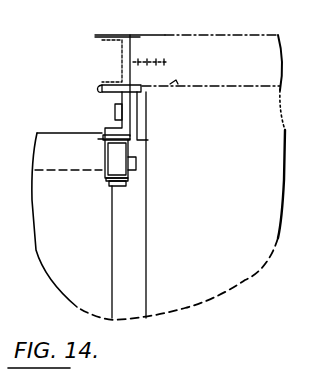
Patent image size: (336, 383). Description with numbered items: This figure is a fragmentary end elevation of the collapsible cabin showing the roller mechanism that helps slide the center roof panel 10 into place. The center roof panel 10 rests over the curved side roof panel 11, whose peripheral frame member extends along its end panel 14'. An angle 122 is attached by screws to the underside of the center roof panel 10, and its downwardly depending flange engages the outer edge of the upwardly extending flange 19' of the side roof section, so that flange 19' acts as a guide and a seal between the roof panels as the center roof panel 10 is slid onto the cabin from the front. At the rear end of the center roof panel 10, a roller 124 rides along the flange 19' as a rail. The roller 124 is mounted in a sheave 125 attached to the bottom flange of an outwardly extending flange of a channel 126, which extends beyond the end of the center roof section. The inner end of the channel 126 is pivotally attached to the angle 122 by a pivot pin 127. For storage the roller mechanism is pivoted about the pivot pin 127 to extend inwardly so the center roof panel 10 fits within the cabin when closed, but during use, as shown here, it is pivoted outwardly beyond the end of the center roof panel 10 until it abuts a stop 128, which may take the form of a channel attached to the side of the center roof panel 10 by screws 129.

The center roof panel 10 is at (246, 35).
The side roof panel 11 is at (46, 130).
The end panel 14' is at (296, 184).
The upwardly extending flange 19' is at (156, 205).
The angle 122 is at (172, 84).
The roller 124 is at (110, 186).
The sheave 125 is at (135, 148).
The channel 126 is at (102, 89).
The pivot pin 127 is at (115, 113).
The stop 128 is at (103, 40).
The screws 129 is at (133, 58).